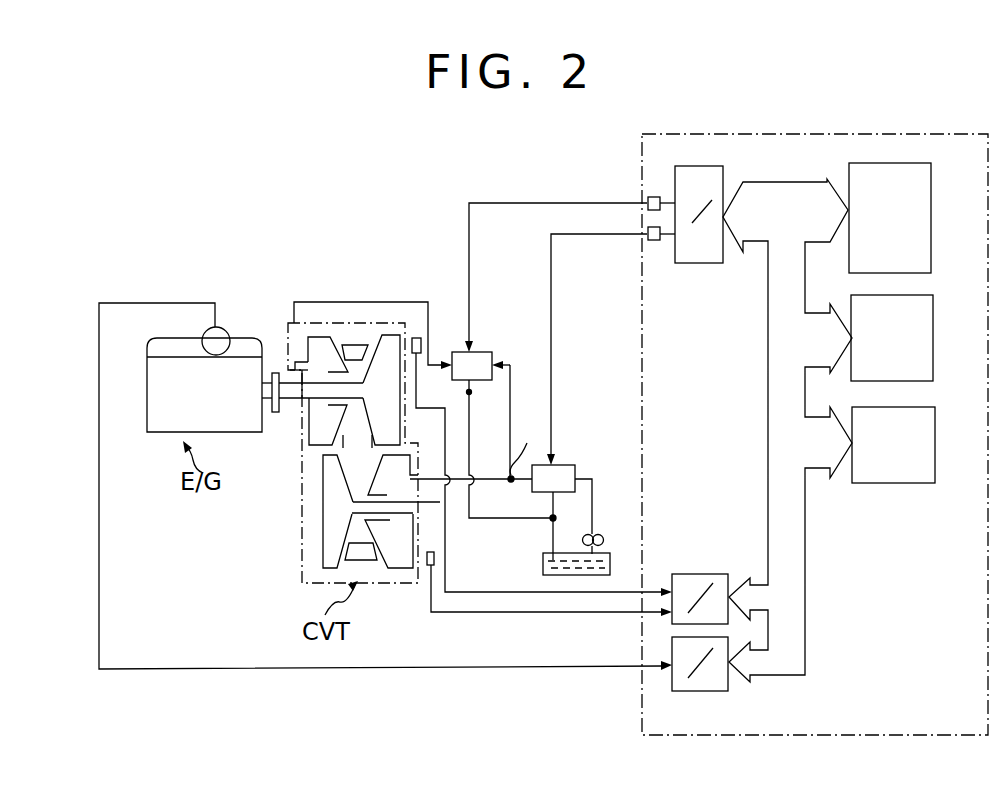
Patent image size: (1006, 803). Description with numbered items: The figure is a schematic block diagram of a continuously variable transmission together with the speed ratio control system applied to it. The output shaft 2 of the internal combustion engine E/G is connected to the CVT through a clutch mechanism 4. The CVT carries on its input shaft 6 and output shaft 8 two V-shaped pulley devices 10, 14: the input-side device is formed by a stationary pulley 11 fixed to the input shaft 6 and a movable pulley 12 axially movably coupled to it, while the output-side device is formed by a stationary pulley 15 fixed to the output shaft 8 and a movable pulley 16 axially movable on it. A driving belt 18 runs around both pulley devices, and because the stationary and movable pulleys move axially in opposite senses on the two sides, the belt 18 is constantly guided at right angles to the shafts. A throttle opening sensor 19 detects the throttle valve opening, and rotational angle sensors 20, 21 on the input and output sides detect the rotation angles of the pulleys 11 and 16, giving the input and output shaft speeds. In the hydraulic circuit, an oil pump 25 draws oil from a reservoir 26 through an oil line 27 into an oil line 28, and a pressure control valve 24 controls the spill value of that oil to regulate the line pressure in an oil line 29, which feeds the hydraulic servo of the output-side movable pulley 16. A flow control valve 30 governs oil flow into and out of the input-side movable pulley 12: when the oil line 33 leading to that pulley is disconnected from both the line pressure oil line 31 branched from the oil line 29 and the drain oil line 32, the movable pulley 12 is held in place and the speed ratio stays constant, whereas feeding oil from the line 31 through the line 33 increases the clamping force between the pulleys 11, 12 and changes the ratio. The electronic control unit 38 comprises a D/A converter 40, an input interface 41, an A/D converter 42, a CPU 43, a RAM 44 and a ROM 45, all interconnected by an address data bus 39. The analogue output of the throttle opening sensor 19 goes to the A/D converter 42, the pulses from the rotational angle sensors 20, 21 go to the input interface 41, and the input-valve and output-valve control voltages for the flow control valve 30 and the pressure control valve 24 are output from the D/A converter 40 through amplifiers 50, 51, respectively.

The output shaft 2 is at (271, 372).
The clutch mechanism 4 is at (276, 413).
The input shaft 6 is at (290, 377).
The output shaft 8 is at (441, 503).
The V-shaped pulley device 10 is at (369, 330).
The stationary pulley 11 is at (387, 340).
The movable pulley 12 is at (316, 345).
The V-shaped pulley device 14 is at (344, 544).
The stationary pulley 15 is at (330, 553).
The movable pulley 16 is at (403, 559).
The driving belt 18 is at (356, 350).
The throttle opening sensor 19 is at (222, 330).
The rotational angle sensor 20 is at (418, 354).
The rotational angle sensor 21 is at (436, 558).
The pressure control valve 24 is at (575, 470).
The oil pump 25 is at (601, 534).
The reservoir 26 is at (612, 563).
The oil line 27 is at (593, 498).
The oil line 28 is at (552, 505).
The oil line 29 is at (493, 482).
The flow control valve 30 is at (481, 352).
The line pressure oil line 31 is at (511, 392).
The drain oil line 32 is at (471, 445).
The oil line 33 is at (371, 302).
The electronic control unit 38 is at (763, 129).
The address data bus 39 is at (765, 340).
The D/A converter 40 is at (698, 264).
The input interface 41 is at (700, 574).
The A/D converter 42 is at (702, 691).
The CPU 43 is at (931, 218).
The RAM 44 is at (933, 335).
The ROM 45 is at (935, 451).
The amplifier 50 is at (647, 200).
The amplifier 51 is at (647, 237).